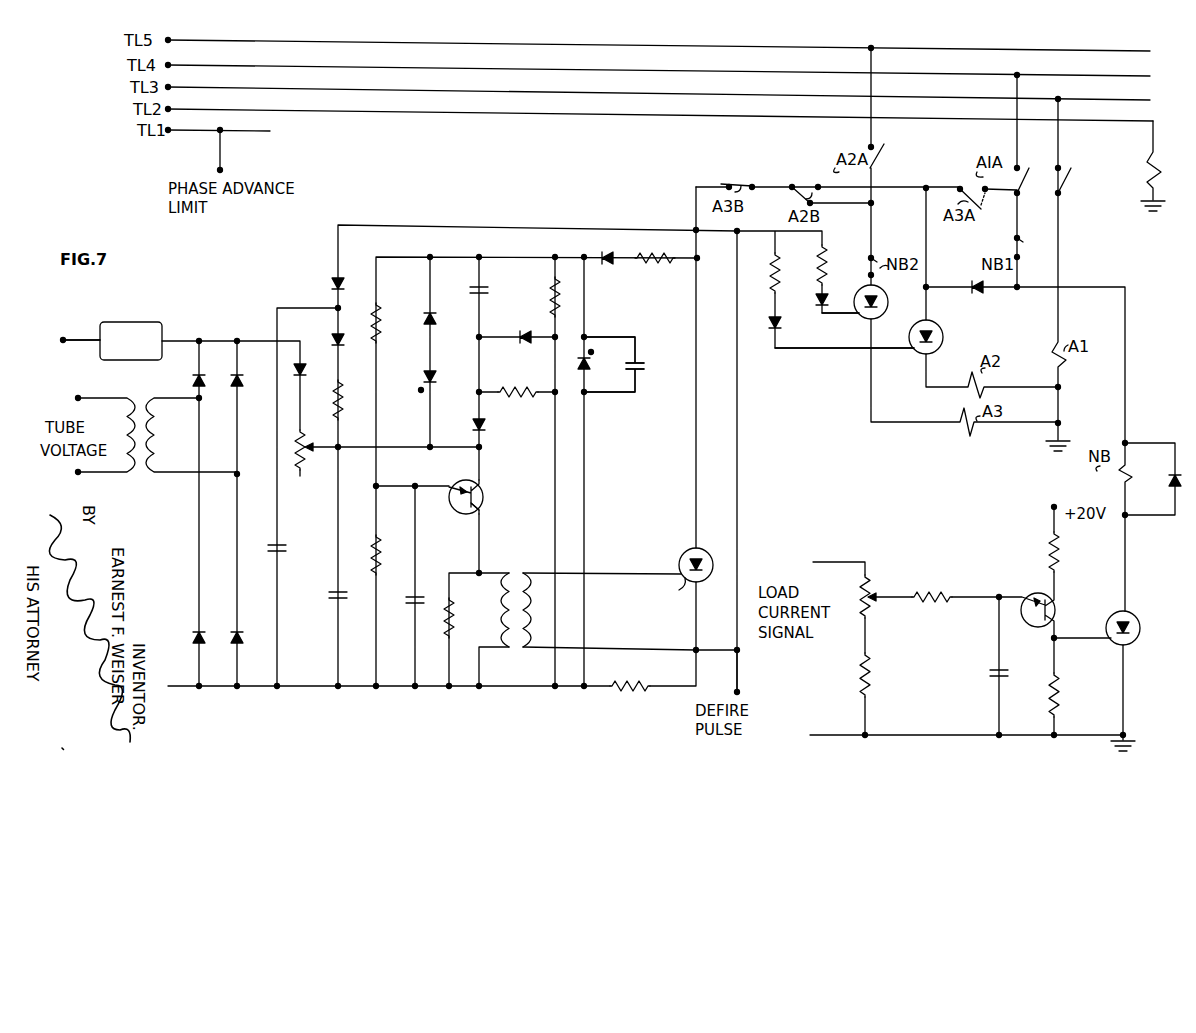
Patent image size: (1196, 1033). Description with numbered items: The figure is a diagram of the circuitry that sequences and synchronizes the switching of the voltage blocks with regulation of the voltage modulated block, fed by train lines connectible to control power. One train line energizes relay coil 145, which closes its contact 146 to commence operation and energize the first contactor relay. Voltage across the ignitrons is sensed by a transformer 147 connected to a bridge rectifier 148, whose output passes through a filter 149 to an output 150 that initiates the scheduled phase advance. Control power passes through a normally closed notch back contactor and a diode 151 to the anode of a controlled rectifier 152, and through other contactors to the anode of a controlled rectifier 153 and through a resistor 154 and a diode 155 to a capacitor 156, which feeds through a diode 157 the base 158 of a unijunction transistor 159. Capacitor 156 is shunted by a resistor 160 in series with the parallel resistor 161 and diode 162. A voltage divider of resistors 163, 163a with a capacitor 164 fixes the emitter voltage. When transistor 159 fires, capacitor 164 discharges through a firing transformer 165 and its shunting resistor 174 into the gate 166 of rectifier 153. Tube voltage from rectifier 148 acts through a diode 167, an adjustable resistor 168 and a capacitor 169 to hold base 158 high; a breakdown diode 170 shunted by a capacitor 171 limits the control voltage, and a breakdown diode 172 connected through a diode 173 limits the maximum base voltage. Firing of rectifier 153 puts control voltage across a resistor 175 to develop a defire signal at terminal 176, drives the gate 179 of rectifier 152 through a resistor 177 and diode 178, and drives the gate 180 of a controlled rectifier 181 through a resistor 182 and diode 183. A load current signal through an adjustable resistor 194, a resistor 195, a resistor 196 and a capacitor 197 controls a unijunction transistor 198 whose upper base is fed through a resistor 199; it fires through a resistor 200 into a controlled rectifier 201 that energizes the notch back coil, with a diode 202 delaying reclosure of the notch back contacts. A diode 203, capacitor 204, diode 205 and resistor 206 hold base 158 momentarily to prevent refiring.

The relay coil 145 is at (1129, 172).
The contact 146 is at (1068, 178).
The transformer 147 is at (152, 493).
The bridge rectifier 148 is at (232, 435).
The filter 149 is at (139, 324).
The output 150 is at (60, 338).
The diode 151 is at (975, 298).
The controlled rectifier 152 is at (945, 334).
The controlled rectifier 153 is at (674, 552).
The resistor 154 is at (658, 276).
The diode 155 is at (606, 270).
The capacitor 156 is at (488, 291).
The diode 157 is at (488, 426).
The base 158 is at (484, 488).
The unijunction transistor 159 is at (482, 505).
The resistor 160 is at (544, 293).
The resistor 161 is at (514, 400).
The diode 162 is at (522, 345).
The resistor 163 is at (384, 330).
The resistor 163a is at (386, 543).
The capacitor 164 is at (406, 608).
The firing transformer 165 is at (524, 679).
The gate 166 is at (670, 598).
The diode 167 is at (304, 380).
The adjustable resistor 168 is at (305, 476).
The capacitor 169 is at (329, 602).
The breakdown diode 170 is at (590, 368).
The capacitor 171 is at (647, 352).
The breakdown diode 172 is at (438, 374).
The diode 173 is at (420, 311).
The shunting resistor 174 is at (438, 650).
The resistor 175 is at (636, 686).
The terminal 176 is at (740, 688).
The resistor 177 is at (782, 262).
The diode 178 is at (782, 320).
The gate 179 is at (906, 360).
The gate 180 is at (858, 322).
The controlled rectifier 181 is at (888, 293).
The resistor 182 is at (830, 260).
The diode 183 is at (816, 305).
The adjustable resistor 194 is at (875, 588).
The resistor 195 is at (874, 676).
The resistor 196 is at (944, 596).
The capacitor 197 is at (986, 674).
The unijunction transistor 198 is at (1059, 600).
The resistor 199 is at (1066, 553).
The resistor 200 is at (1066, 690).
The controlled rectifier 201 is at (1136, 618).
The diode 202 is at (1148, 480).
The diode 203 is at (324, 296).
The capacitor 204 is at (288, 549).
The diode 205 is at (328, 342).
The resistor 206 is at (344, 412).